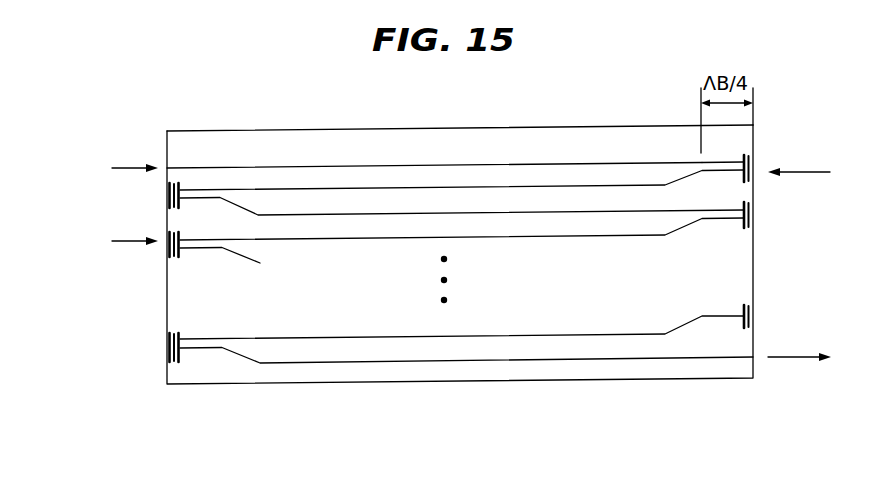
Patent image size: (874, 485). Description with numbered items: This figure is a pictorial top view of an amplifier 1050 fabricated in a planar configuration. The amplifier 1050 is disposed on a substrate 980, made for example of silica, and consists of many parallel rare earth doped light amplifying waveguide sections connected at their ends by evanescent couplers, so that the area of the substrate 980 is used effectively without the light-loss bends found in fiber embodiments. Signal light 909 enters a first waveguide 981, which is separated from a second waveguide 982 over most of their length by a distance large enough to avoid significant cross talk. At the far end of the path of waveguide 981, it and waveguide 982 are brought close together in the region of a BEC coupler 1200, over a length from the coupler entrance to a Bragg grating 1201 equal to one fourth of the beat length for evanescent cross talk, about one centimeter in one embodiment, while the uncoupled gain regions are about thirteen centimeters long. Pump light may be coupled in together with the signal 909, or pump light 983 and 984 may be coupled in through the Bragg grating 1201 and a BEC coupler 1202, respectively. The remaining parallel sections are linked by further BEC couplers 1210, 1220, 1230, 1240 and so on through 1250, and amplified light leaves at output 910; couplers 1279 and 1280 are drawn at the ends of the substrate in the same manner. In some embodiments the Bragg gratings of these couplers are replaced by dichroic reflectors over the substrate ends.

The amplifier 1050 is at (183, 93).
The substrate 980 is at (270, 145).
The waveguide 981 is at (365, 165).
The second waveguide 982 is at (468, 190).
The BEC coupler 1200 is at (718, 162).
The Bragg grating 1201 is at (755, 158).
The BEC coupler 1202 is at (200, 199).
The BEC coupler 1210 is at (170, 248).
The BEC coupler 1220 is at (228, 255).
The BEC coupler 1230 is at (204, 350).
The BEC coupler 1240 is at (718, 222).
The BEC coupler 1250 is at (167, 198).
The termination 1279 is at (758, 308).
The termination 1280 is at (167, 352).
The signal light 909 is at (133, 156).
The pump light 983 is at (799, 184).
The pump light 984 is at (134, 230).
The output port 910 is at (799, 345).